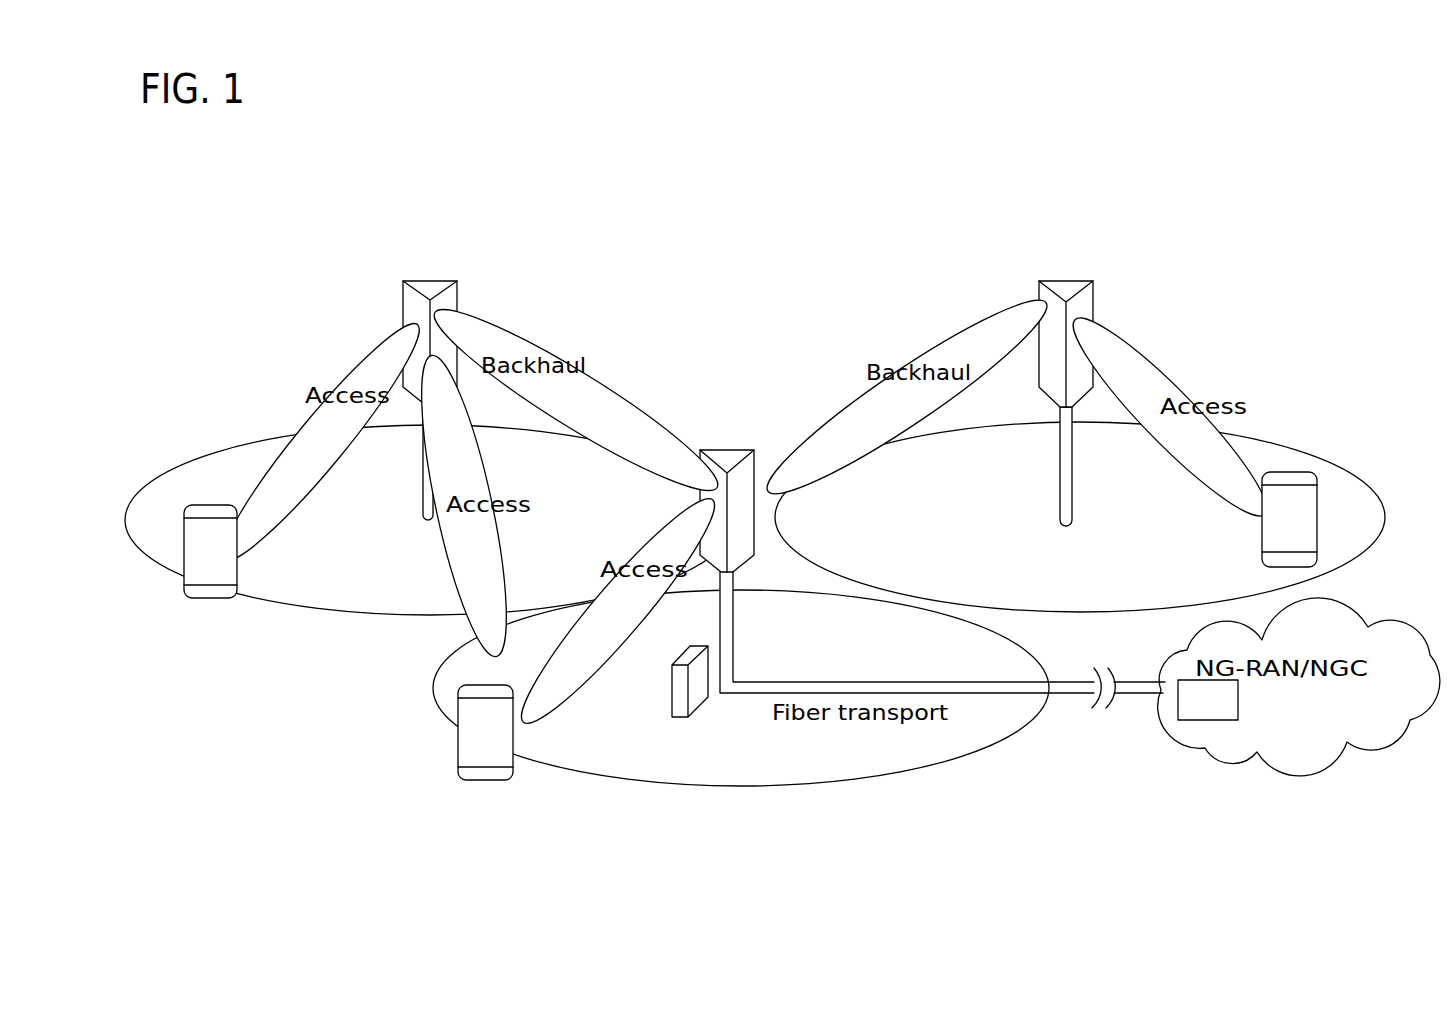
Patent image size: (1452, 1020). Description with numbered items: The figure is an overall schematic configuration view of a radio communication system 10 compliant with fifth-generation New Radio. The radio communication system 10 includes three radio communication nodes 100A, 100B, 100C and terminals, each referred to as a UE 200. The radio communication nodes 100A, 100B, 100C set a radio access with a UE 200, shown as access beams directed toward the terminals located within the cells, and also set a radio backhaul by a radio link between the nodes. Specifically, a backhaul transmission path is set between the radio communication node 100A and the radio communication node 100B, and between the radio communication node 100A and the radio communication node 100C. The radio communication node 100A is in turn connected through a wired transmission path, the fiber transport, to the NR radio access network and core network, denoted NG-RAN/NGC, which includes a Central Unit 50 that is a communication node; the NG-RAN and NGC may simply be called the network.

The radio communication system 10 is at (1214, 300).
The radio communication node 100A is at (728, 456).
The radio communication node 100B is at (430, 287).
The radio communication node 100C is at (1071, 287).
The terminal 200 is at (207, 505).
The Central Unit 50 is at (1220, 720).